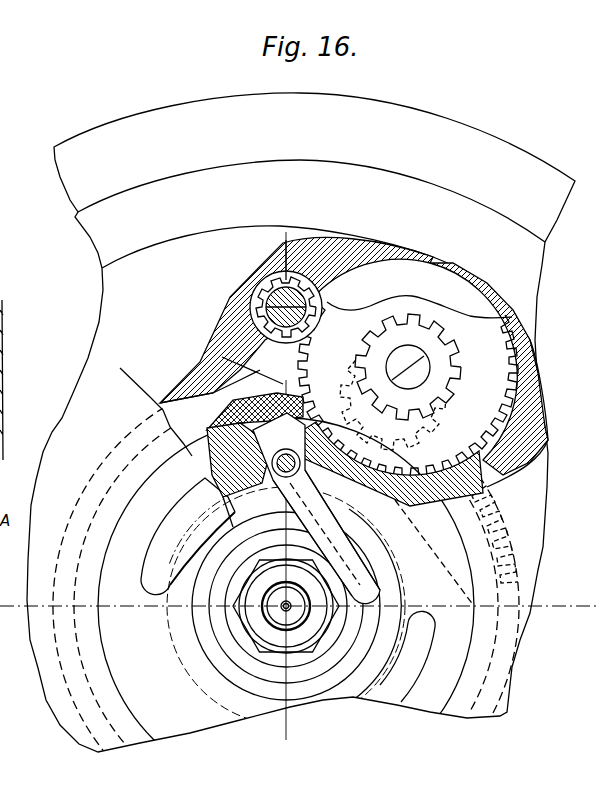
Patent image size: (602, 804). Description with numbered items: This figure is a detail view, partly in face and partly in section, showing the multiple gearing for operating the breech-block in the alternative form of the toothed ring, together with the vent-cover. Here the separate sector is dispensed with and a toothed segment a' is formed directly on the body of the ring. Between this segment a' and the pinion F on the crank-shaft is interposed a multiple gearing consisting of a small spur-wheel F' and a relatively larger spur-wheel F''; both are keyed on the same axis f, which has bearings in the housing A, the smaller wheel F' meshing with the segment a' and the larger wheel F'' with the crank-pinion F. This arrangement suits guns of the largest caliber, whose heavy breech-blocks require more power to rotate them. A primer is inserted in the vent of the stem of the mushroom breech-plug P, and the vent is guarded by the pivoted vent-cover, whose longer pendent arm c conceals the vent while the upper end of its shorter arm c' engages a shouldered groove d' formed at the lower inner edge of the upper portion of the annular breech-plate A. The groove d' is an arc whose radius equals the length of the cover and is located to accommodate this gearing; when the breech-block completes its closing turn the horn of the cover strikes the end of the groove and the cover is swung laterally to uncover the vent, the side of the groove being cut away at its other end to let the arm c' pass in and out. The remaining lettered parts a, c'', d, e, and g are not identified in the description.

The housing or annular breech-plate A is at (301, 422).
The pinion F is at (262, 291).
The small spur-wheel F' is at (403, 395).
The larger spur-wheel F'' is at (408, 390).
The axis f is at (408, 367).
The longer pendent arm c is at (316, 606).
The shorter arm c' is at (345, 499).
The pawl c'' is at (293, 508).
The ring a is at (286, 581).
The toothed segment a' is at (499, 531).
The lever d is at (160, 412).
The shouldered groove d' is at (210, 378).
The pin e is at (247, 365).
The link g is at (326, 533).
The mushroom breech-plug P is at (286, 606).